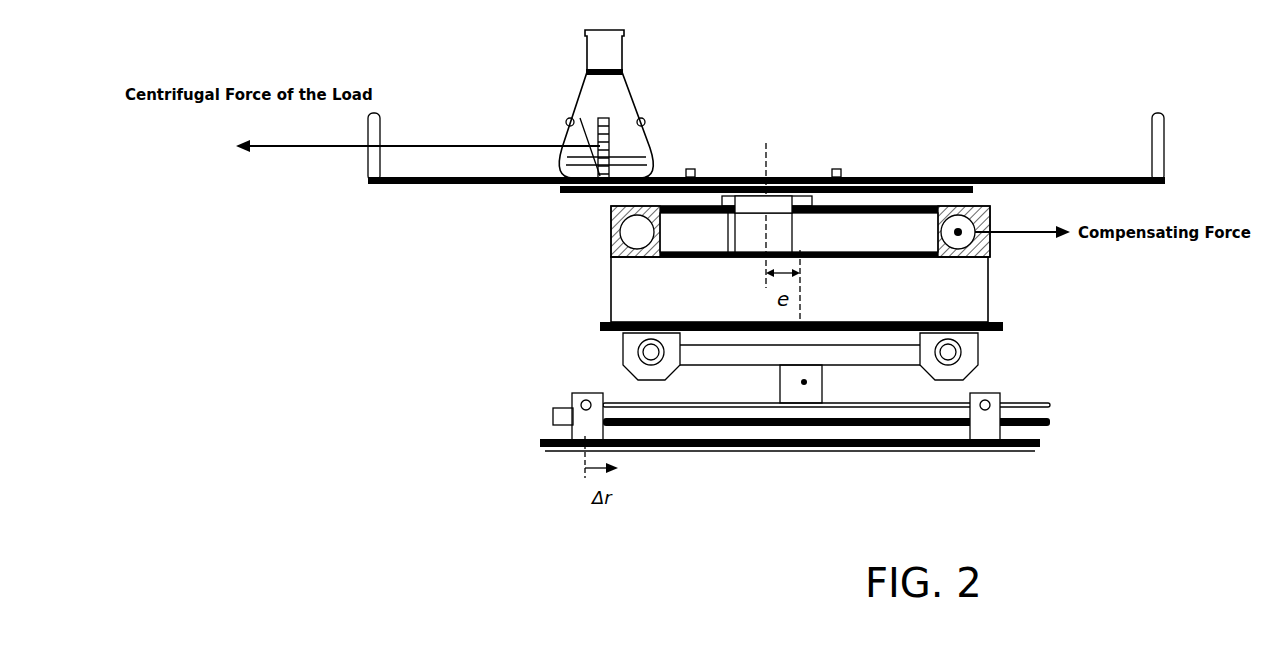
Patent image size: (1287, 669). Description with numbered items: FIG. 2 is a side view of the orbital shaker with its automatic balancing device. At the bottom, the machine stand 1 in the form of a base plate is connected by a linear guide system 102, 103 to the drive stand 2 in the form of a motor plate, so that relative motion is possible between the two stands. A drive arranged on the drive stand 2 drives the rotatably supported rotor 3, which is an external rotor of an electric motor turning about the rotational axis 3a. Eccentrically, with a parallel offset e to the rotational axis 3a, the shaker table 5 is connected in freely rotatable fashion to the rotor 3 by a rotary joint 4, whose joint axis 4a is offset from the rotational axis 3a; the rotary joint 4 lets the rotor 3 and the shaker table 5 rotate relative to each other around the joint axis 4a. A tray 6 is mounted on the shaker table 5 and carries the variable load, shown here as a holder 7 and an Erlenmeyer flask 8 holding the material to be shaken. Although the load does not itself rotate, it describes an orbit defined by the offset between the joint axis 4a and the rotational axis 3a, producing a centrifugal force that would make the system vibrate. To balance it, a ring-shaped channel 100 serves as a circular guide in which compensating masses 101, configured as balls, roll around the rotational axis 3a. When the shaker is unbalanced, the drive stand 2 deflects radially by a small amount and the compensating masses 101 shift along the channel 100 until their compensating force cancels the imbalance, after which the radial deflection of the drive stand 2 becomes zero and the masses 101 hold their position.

The machine stand 1 is at (1032, 444).
The drive stand 2 is at (604, 333).
The rotor 3 is at (974, 305).
The rotational axis 3a is at (817, 290).
The rotary joint 4 is at (780, 232).
The joint axis 4a is at (763, 200).
The shaker table 5 is at (957, 185).
The tray 6 is at (1033, 178).
The holder 7 is at (615, 140).
The Erlenmeyer flask 8 is at (607, 52).
The ring-shaped channel 100 is at (611, 222).
The compensating masses 101 is at (958, 232).
The linear guide system 102 is at (574, 396).
The linear guide system 103 is at (804, 382).